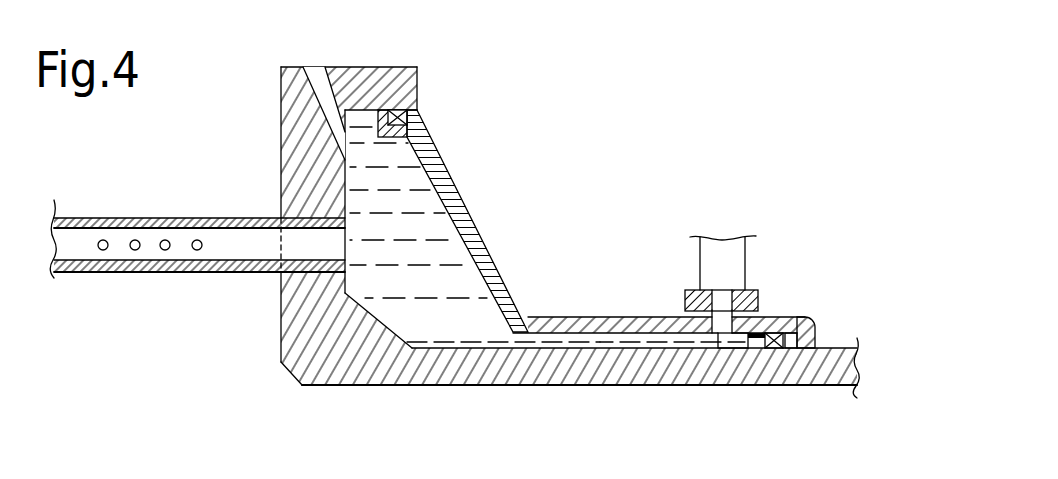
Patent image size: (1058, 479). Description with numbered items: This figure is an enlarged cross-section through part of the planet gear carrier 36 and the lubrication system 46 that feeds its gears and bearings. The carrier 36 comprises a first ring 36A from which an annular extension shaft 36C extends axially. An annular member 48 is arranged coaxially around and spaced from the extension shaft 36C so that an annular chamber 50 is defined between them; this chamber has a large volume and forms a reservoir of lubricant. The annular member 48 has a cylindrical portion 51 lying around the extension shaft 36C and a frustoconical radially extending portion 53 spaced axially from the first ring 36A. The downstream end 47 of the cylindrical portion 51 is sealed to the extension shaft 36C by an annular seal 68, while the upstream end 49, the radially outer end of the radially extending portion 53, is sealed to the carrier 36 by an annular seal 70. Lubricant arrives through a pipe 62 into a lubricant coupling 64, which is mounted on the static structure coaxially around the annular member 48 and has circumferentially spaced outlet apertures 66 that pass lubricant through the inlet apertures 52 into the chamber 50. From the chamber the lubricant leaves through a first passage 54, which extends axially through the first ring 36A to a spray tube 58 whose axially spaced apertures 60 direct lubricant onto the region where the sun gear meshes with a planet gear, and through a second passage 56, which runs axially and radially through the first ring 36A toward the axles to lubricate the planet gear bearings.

The planet gear carrier 36 is at (268, 352).
The first ring 36A is at (295, 145).
The extension shaft 36C is at (587, 368).
The lubrication system 46 is at (752, 215).
The downstream end 47 is at (802, 327).
The annular member 48 is at (458, 212).
The upstream end 49 is at (412, 118).
The annular chamber 50 is at (458, 317).
The cylindrical portion 51 is at (568, 325).
The inlet aperture 52 is at (717, 350).
The radially extending portion 53 is at (488, 251).
The first passage 54 is at (318, 247).
The second passage 56 is at (325, 97).
The spray tube 58 is at (193, 273).
The aperture 60 is at (165, 250).
The pipe 62 is at (718, 252).
The lubricant coupling 64 is at (688, 296).
The outlet aperture 66 is at (728, 302).
The annular seal 68 is at (768, 350).
The annular seal 70 is at (396, 112).